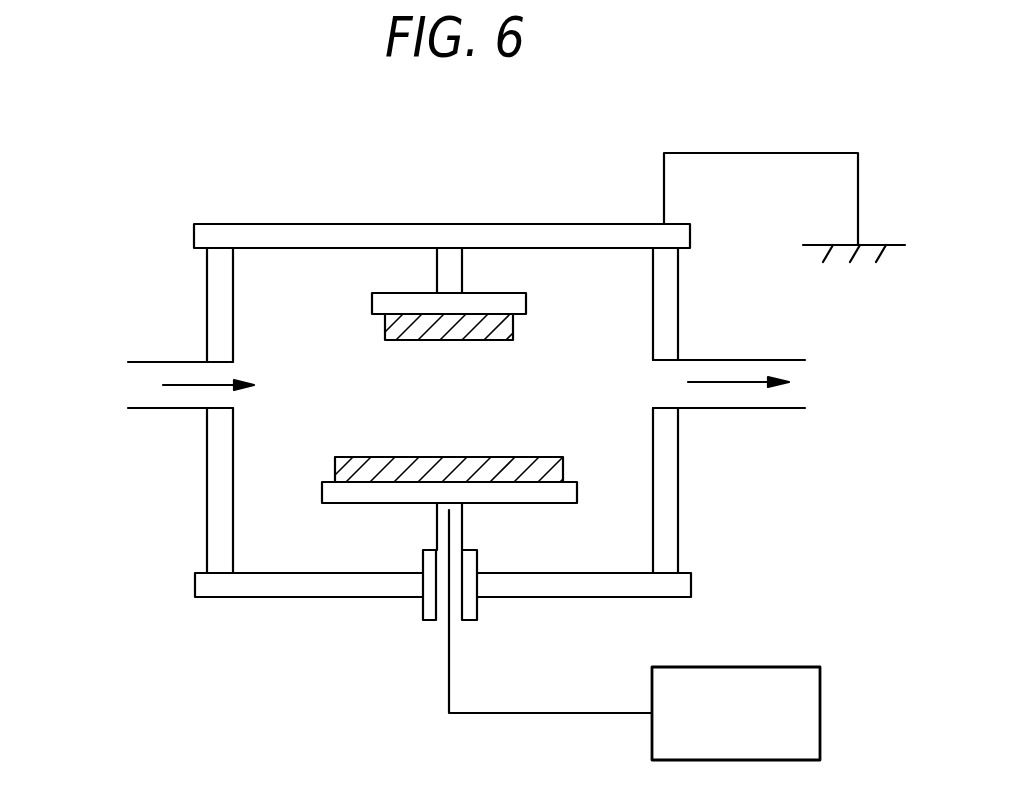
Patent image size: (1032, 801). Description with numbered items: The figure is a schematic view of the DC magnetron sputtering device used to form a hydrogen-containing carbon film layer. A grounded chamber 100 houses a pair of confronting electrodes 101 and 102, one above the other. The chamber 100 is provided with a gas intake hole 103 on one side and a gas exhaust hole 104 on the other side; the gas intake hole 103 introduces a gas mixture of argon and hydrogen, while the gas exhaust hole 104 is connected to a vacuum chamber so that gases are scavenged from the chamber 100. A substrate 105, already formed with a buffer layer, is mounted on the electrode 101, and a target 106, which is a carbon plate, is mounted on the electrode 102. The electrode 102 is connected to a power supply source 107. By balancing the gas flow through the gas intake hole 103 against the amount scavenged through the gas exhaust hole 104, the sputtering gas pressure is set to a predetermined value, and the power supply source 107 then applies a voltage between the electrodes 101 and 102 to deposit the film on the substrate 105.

The chamber 100 is at (678, 524).
The electrode 101 is at (526, 303).
The electrode 102 is at (560, 498).
The gas intake hole 103 is at (157, 410).
The gas exhaust hole 104 is at (727, 361).
The substrate 105 is at (385, 330).
The target 106 is at (357, 465).
The power supply source 107 is at (788, 750).